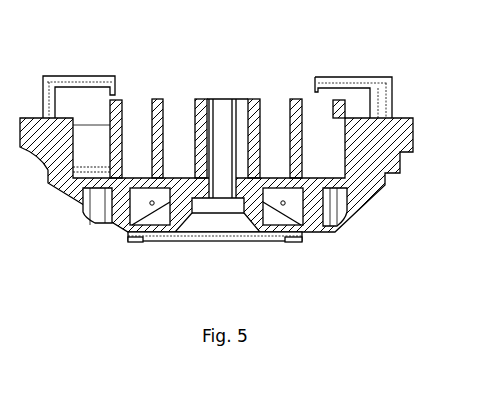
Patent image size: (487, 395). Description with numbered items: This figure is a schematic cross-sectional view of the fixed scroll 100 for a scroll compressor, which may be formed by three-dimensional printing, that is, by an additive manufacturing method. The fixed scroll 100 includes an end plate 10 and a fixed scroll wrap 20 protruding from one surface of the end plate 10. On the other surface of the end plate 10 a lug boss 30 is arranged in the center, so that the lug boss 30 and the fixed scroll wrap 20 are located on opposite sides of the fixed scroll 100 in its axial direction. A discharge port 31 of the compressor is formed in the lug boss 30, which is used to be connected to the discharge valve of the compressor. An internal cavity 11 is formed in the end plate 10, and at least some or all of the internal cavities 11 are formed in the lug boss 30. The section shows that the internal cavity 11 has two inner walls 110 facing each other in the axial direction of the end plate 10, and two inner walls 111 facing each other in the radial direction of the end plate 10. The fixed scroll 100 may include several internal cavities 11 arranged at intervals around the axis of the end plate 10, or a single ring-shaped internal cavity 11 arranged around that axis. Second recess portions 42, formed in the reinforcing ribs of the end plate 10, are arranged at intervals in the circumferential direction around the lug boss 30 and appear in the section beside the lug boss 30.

The fixed scroll 100 is at (403, 61).
The end plate 10 is at (373, 192).
The internal cavity 11 is at (295, 243).
The fixed scroll wrap 20 is at (158, 106).
The lug boss 30 is at (167, 236).
The discharge port 31 is at (221, 195).
The second recess portion 42 is at (341, 210).
The inner wall 110 is at (157, 200).
The inner wall 111 is at (295, 197).